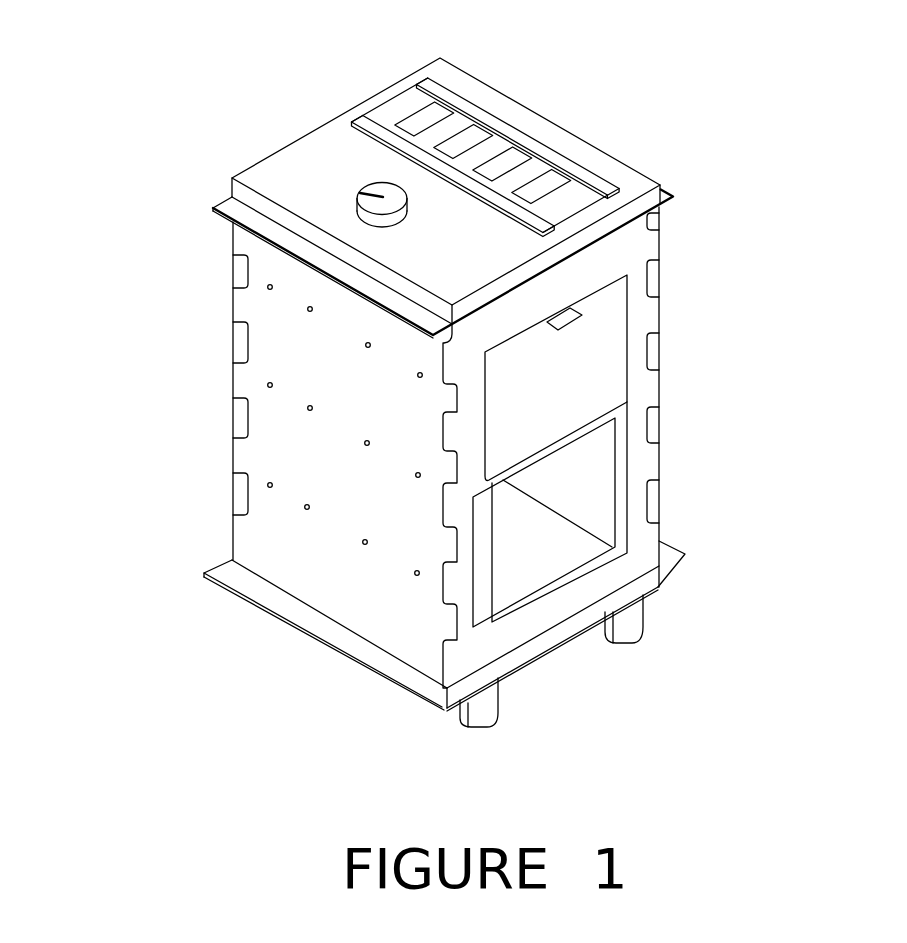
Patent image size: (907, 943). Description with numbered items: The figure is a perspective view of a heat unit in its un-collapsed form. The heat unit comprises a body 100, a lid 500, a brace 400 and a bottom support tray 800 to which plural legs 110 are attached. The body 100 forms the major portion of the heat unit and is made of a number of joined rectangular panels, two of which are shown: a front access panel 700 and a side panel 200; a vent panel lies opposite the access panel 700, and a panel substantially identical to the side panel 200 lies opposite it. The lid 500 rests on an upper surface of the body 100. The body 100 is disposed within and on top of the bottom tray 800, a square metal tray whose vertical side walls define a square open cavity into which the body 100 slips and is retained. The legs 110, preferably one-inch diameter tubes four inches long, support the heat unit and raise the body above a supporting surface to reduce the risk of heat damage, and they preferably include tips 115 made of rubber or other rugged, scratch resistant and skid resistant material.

The body 100 is at (500, 409).
The side panel 200 is at (262, 472).
The lid 500 is at (533, 140).
The brace 400 is at (568, 537).
The front access panel 700 is at (604, 584).
The bottom support tray 800 is at (295, 635).
The legs 110 is at (642, 635).
The tips 115 is at (497, 718).